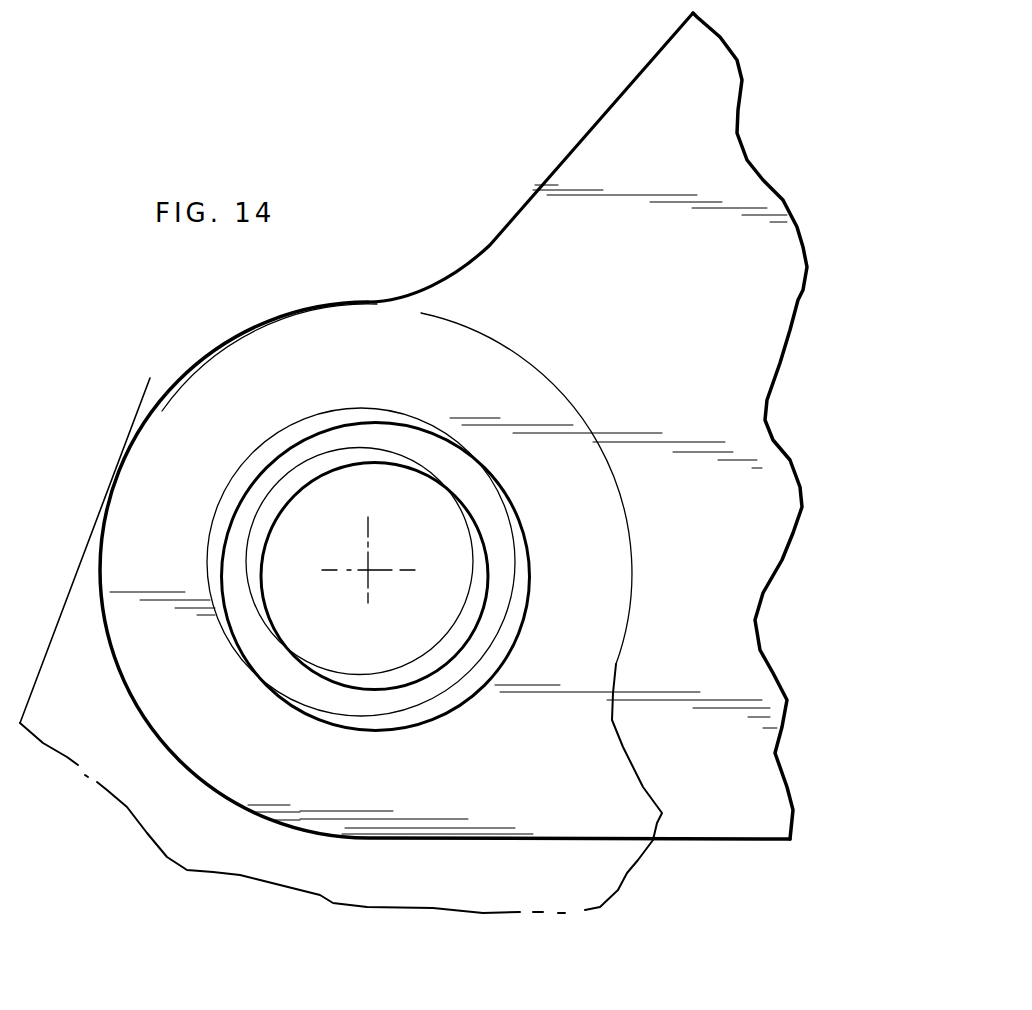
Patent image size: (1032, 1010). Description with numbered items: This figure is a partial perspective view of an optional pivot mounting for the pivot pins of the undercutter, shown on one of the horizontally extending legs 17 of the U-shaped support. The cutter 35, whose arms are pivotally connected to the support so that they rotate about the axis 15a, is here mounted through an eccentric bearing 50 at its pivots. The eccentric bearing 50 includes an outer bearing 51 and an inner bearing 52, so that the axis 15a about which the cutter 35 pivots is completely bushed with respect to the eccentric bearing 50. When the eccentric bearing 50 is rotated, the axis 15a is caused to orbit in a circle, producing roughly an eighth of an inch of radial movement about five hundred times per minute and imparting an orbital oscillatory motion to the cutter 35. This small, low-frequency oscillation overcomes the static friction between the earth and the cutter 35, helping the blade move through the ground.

The horizontally extending leg 17 is at (740, 354).
The cutter 35 is at (603, 895).
The eccentric bearing 50 is at (379, 584).
The outer bearing 51 is at (402, 728).
The inner bearing 52 is at (482, 610).
The axis 15a is at (432, 563).